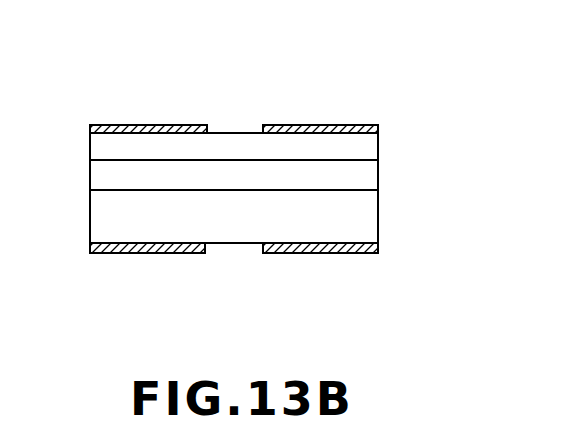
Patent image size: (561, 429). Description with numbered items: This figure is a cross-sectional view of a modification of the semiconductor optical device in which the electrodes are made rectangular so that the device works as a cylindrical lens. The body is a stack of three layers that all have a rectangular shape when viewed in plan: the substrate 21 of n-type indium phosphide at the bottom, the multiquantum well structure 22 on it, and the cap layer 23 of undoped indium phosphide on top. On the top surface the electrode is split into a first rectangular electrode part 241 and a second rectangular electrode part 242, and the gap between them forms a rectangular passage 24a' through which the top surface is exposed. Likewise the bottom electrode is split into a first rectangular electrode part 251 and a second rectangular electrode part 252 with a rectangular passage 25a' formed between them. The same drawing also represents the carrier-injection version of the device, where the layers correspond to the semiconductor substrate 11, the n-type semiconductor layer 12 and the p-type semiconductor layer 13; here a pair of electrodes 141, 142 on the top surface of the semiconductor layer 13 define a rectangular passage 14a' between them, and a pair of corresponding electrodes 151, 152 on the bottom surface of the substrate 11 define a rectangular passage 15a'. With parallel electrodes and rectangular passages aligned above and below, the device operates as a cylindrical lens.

The first rectangular electrode part 241 is at (120, 125).
The rectangular passage 24a' is at (291, 89).
The second rectangular electrode part 242 is at (360, 124).
The cap layer 23 is at (378, 136).
The multiquantum well structure 22 is at (378, 169).
The substrate 21 is at (378, 215).
The first rectangular electrode part 251 is at (123, 255).
The rectangular passage 25a' is at (265, 288).
The second rectangular electrode part 252 is at (363, 252).
The electrode 141 is at (142, 90).
The rectangular passage 14a' is at (291, 89).
The electrode 142 is at (386, 94).
The p-type semiconductor layer 13 is at (292, 140).
The n-type semiconductor layer 12 is at (292, 174).
The semiconductor substrate 11 is at (292, 216).
The electrode 151 is at (126, 291).
The rectangular passage 15a' is at (265, 288).
The electrode 152 is at (379, 290).